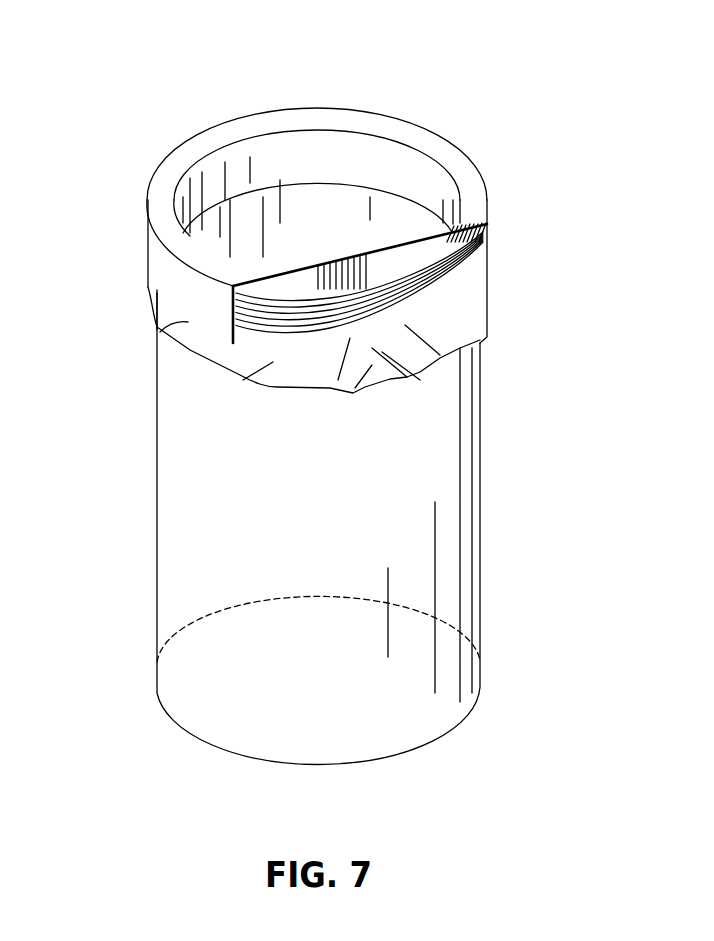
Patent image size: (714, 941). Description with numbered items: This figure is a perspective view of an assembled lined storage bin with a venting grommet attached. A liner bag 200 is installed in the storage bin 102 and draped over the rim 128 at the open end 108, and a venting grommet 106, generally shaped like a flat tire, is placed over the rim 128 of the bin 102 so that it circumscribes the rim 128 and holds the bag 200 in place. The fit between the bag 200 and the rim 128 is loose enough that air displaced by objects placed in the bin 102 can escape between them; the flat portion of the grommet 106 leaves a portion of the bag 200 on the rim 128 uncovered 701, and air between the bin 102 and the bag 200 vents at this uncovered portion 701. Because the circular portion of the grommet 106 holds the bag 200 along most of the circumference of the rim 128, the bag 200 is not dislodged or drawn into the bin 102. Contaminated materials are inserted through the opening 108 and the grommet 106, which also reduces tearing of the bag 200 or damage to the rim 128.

The bin 102 is at (157, 568).
The venting grommet 106 is at (407, 132).
The open end 108 is at (290, 225).
The rim 128 is at (487, 276).
The liner bag 200 is at (157, 309).
The uncovered portion 701 is at (392, 293).